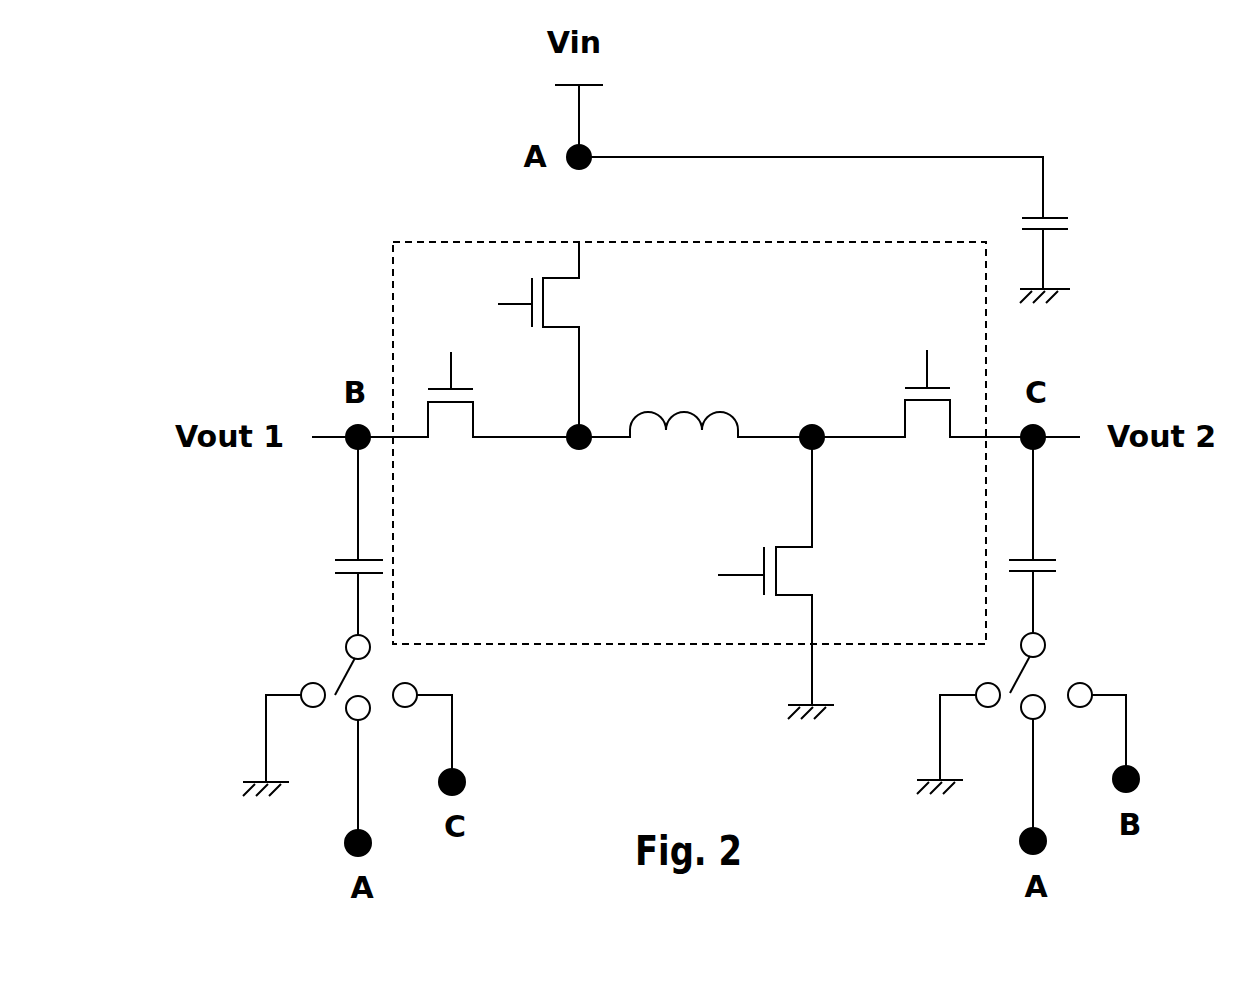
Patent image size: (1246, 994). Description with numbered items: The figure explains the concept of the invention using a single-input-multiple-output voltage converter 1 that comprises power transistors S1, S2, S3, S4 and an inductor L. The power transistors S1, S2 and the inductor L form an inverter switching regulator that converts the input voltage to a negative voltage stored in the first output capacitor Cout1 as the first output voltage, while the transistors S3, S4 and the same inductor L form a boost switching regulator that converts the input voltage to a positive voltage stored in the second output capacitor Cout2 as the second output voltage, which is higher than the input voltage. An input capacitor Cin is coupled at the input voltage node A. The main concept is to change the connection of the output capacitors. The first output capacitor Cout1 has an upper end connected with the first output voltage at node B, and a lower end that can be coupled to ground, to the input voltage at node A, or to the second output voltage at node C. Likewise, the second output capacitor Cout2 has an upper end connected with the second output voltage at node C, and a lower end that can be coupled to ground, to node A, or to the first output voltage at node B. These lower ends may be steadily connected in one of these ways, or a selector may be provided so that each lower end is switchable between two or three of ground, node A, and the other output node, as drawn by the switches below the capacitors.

The single-input-multiple-output voltage converter 1 is at (393, 267).
The power transistor S1 is at (439, 419).
The power transistor S2 is at (561, 334).
The power transistor S3 is at (781, 584).
The power transistor S4 is at (952, 418).
The inductor L is at (695, 393).
The input capacitor Cin is at (1078, 252).
The first output capacitor Cout1 is at (305, 542).
The second output capacitor Cout2 is at (1095, 541).